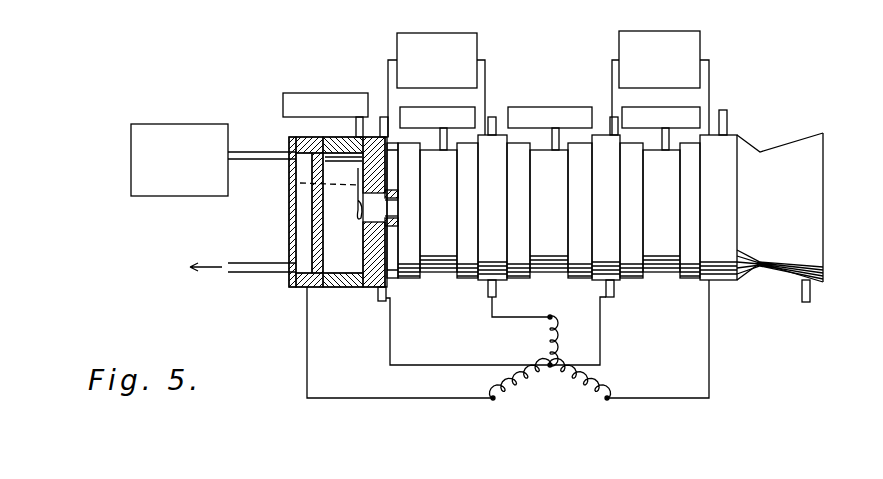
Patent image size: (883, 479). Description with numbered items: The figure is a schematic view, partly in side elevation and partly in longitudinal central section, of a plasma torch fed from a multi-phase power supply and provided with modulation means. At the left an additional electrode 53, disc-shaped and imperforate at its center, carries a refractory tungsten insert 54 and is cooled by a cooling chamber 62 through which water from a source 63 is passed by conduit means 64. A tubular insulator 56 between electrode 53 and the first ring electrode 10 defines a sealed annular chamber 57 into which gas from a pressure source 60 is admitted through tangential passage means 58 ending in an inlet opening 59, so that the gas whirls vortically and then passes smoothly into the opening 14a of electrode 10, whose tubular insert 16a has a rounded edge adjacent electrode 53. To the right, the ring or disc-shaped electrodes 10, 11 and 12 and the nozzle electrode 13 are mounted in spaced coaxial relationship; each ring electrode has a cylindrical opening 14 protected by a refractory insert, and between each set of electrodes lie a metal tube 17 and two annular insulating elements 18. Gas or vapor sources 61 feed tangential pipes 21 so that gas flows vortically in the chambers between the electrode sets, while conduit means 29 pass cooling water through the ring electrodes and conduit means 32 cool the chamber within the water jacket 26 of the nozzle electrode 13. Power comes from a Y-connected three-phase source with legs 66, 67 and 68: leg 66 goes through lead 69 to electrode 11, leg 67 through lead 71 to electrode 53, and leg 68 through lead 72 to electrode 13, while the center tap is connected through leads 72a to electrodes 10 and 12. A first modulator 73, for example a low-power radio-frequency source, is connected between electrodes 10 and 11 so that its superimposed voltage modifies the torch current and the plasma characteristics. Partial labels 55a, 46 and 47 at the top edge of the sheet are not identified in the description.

The cut-off label 55a is at (306, 6).
The cut-off label 46 is at (374, 8).
The cut-off label 47 is at (458, 6).
The water source 63 is at (175, 124).
The conduit means 64 is at (244, 152).
The additional electrode 53 is at (286, 297).
The cooling chamber 62 is at (303, 217).
The insert 54 is at (314, 202).
The sealed chamber 57 is at (369, 256).
The tangential passage means 58 is at (300, 183).
The inlet opening 59 is at (360, 213).
The tubular insulator 56 is at (342, 133).
The opening 14a is at (387, 213).
The tubular insert 16a is at (387, 223).
The pressure source 60 is at (327, 93).
The electrode 10 is at (382, 117).
The first modulator 73 is at (468, 40).
The cylindrical opening 14 is at (686, 31).
The gas or vapor sources 61 is at (450, 107).
The tangential pipes 21 is at (441, 150).
The metal tube 17 is at (446, 272).
The annular elements 18 is at (419, 282).
The electrode 11 is at (503, 133).
The electrode 12 is at (606, 130).
The conduit means 32 is at (728, 113).
The nozzle electrode 13 is at (818, 118).
The water jacket 26 is at (810, 188).
The conduit means 29 is at (493, 117).
The lead 71 is at (376, 398).
The leads 72a is at (390, 354).
The lead 72 is at (710, 374).
The lead 69 is at (516, 318).
The leg 66 is at (557, 352).
The leg 67 is at (507, 379).
The leg 68 is at (583, 398).